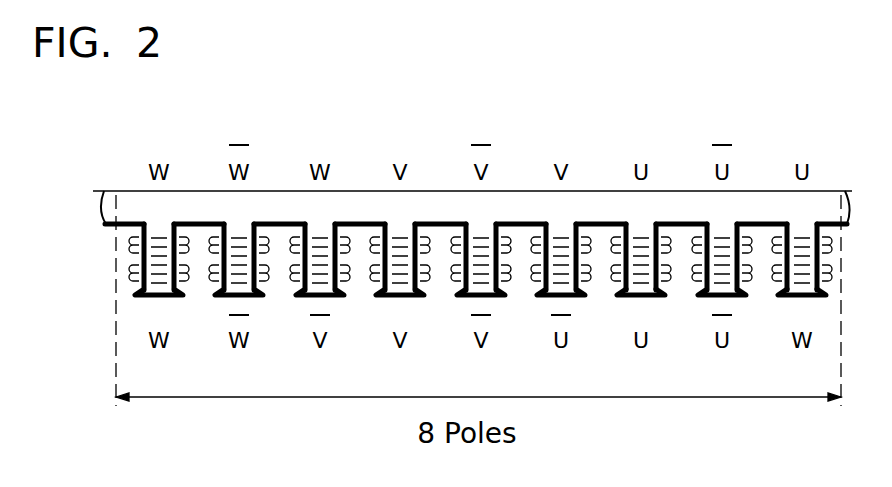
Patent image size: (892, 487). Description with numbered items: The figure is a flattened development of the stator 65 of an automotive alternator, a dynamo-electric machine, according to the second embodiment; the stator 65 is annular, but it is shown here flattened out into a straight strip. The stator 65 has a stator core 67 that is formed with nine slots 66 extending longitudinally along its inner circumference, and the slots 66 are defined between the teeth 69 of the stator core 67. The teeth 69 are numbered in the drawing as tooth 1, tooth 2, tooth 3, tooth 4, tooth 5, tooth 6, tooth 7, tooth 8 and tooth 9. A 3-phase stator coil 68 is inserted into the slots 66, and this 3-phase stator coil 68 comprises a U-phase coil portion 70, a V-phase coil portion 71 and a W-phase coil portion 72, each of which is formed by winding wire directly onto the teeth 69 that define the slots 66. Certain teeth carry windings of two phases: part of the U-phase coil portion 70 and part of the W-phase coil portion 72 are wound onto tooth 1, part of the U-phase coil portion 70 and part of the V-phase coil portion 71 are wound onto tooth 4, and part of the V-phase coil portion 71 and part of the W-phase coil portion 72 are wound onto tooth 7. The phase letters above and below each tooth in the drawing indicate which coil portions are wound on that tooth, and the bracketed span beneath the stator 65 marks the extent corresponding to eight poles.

The stator 65 is at (472, 245).
The slots 66 is at (587, 420).
The stator core 67 is at (273, 208).
The 3-phase stator coil 68 is at (552, 121).
The teeth 69 is at (782, 297).
The U-phase coil portion 70 is at (678, 247).
The V-phase coil portion 71 is at (370, 228).
The W-phase coil portion 72 is at (190, 277).
The tooth No. 1 is at (802, 246).
The tooth 2 is at (722, 249).
The tooth 3 is at (641, 246).
The tooth No. 4 is at (561, 249).
The tooth 5 is at (481, 249).
The tooth 6 is at (400, 249).
The tooth No. 7 is at (320, 249).
The tooth 8 is at (239, 249).
The tooth 9 is at (159, 249).